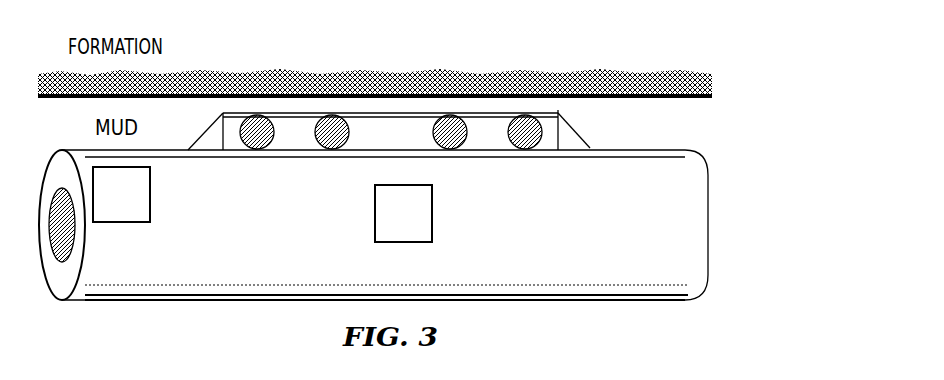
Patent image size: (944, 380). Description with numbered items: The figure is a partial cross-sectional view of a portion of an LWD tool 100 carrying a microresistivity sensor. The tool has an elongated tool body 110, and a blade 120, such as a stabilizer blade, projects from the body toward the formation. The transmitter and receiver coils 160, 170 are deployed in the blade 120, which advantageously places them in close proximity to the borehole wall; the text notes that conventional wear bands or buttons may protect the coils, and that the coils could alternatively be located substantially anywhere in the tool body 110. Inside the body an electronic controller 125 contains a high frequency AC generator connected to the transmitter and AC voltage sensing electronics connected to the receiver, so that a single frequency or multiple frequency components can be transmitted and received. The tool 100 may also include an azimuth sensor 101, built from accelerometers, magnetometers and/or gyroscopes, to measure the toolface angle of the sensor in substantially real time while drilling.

The LWD tool 100 is at (672, 124).
The azimuth sensor 101 is at (400, 242).
The tool body 110 is at (582, 302).
The blade 120 is at (556, 108).
The electronic controller 125 is at (118, 222).
The transmitter coil 160 is at (269, 144).
The receiver coil 170 is at (344, 144).